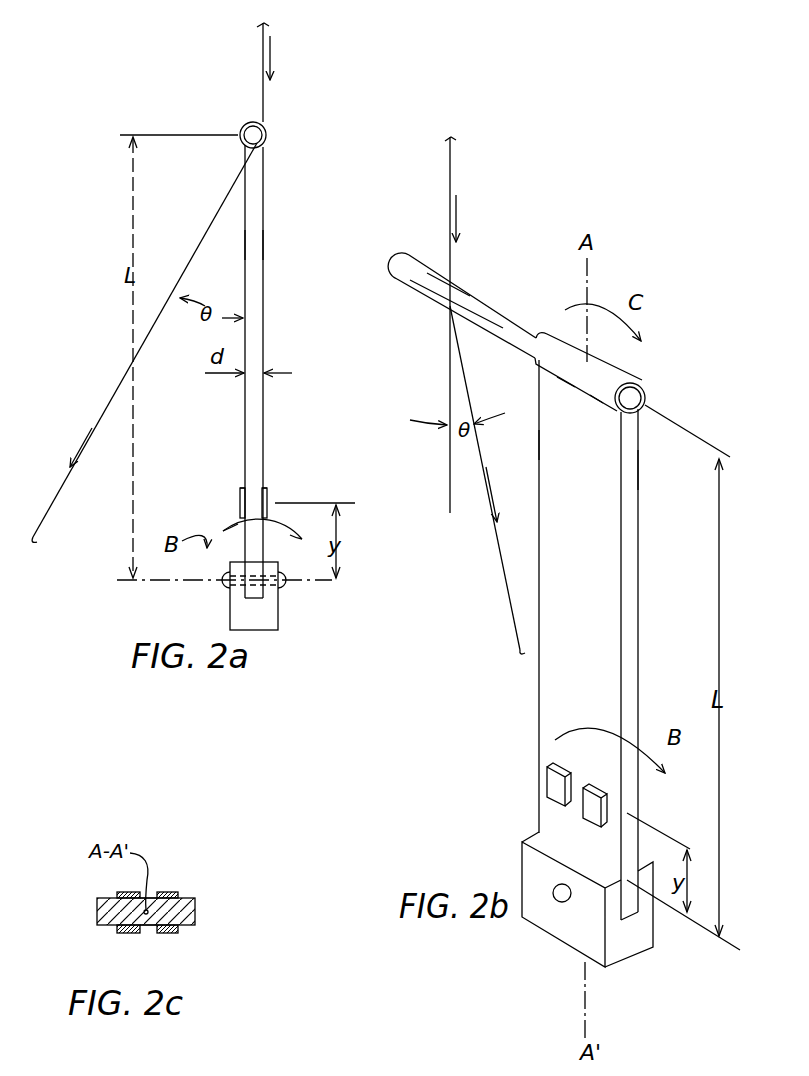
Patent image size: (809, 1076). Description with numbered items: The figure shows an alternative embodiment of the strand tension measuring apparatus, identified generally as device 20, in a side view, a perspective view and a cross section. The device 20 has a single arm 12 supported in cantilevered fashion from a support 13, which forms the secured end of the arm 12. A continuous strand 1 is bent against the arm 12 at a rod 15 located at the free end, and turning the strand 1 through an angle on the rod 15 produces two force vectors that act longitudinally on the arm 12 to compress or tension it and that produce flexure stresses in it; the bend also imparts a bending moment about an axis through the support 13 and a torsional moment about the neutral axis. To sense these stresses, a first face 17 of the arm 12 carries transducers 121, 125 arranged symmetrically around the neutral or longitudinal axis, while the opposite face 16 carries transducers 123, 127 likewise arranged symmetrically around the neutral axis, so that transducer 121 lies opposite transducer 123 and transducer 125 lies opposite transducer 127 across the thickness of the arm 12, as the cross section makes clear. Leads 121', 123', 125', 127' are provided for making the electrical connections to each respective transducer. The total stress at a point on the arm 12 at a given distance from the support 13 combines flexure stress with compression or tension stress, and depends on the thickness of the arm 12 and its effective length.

In FIG. 2A, the continuous strand 1 is at (262, 48).
In FIG. 2B, the continuous strand 1 is at (452, 163).
In FIG. 2A, the arm 12 is at (263, 225).
In FIG. 2B, the arm 12 is at (632, 496).
In FIG. 2C, the arm 12 is at (195, 911).
In FIG. 2A, the support 13 is at (230, 611).
In FIG. 2B, the support 13 is at (638, 946).
In FIG. 2A, the rod 15 is at (247, 125).
In FIG. 2B, the rod 15 is at (492, 300).
In FIG. 2A, the face 16 is at (245, 247).
In FIG. 2B, the face 16 is at (639, 470).
In FIG. 2C, the face 16 is at (197, 903).
In FIG. 2A, the first face 17 is at (264, 248).
In FIG. 2B, the first face 17 is at (551, 444).
In FIG. 2C, the first face 17 is at (192, 931).
In FIG. 2A, the device 20 is at (289, 124).
In FIG. 2B, the device 20 is at (653, 384).
In FIG. 2A, the transducer 121 is at (297, 490).
In FIG. 2B, the transducer 121 is at (528, 774).
In FIG. 2C, the transducer 121 is at (101, 943).
In FIG. 2A, the lead 121' is at (333, 510).
In FIG. 2A, the transducer 123 is at (213, 499).
In FIG. 2C, the transducer 123 is at (103, 883).
In FIG. 2A, the lead 123' is at (202, 517).
In FIG. 2B, the transducer 125 is at (551, 805).
In FIG. 2C, the transducer 125 is at (172, 947).
In FIG. 2A, the lead 125' is at (303, 463).
In FIG. 2C, the transducer 127 is at (186, 867).
In FIG. 2A, the lead 127' is at (213, 469).